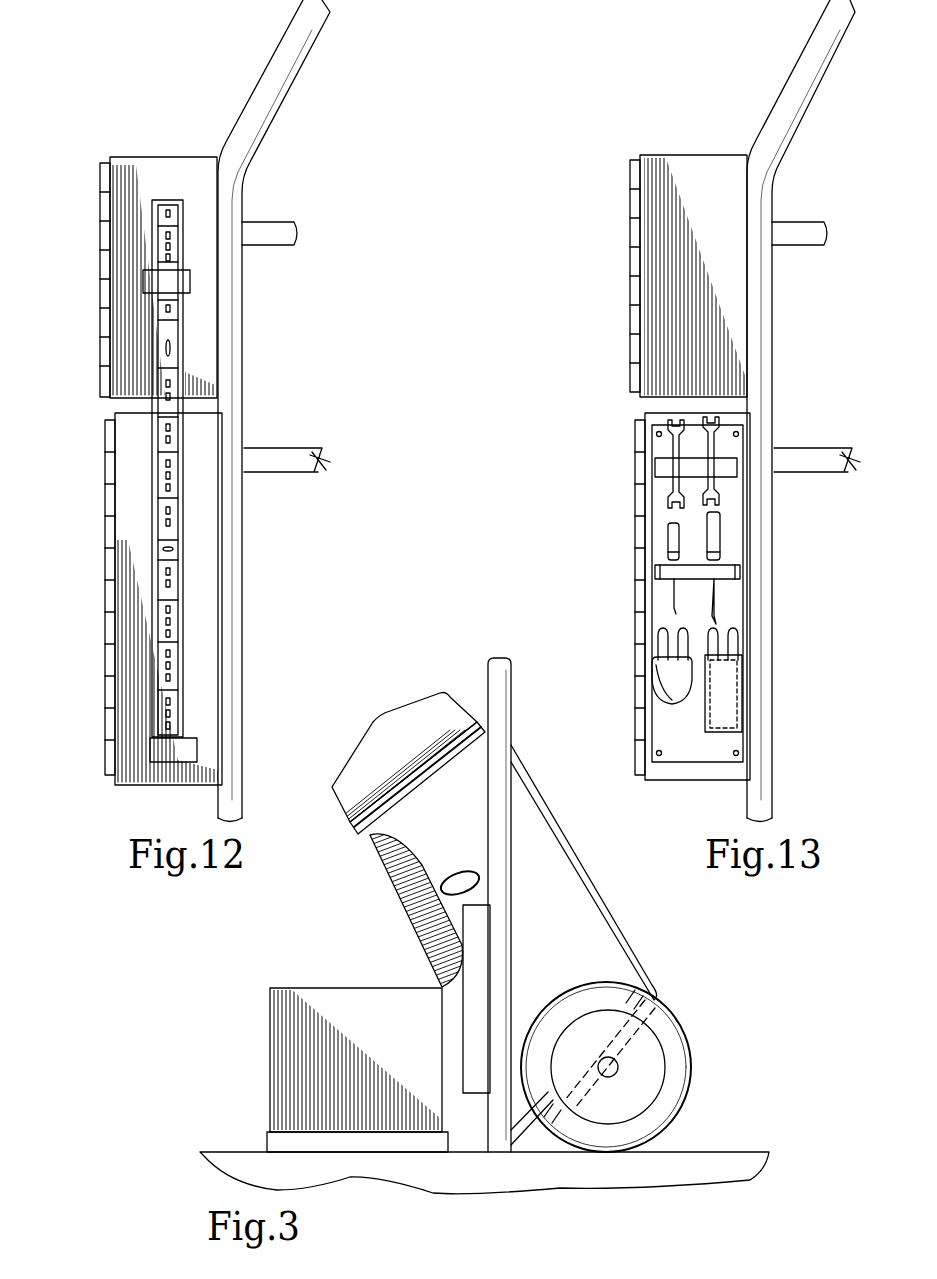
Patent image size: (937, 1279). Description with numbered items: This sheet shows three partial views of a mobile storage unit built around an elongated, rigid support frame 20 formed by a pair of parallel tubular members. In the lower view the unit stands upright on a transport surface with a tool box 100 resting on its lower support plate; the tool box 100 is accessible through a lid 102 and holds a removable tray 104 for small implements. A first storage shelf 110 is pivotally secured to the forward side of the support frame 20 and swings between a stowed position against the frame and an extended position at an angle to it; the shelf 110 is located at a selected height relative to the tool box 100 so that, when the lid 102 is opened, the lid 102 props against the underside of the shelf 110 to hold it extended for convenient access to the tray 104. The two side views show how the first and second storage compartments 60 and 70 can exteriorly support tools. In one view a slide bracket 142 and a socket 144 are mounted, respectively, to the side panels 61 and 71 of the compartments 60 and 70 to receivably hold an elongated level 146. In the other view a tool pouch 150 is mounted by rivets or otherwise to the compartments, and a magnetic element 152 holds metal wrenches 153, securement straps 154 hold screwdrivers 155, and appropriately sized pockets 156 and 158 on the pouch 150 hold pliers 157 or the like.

In FIG. 3, the support frame 20 is at (497, 931).
In FIG. 12, the first storage compartment 60 is at (100, 262).
In FIG. 13, the first storage compartment 60 is at (640, 265).
In FIG. 12, the side panel 61 is at (170, 190).
In FIG. 12, the second storage compartment 70 is at (105, 548).
In FIG. 13, the second storage compartment 70 is at (635, 520).
In FIG. 12, the side panel 71 is at (146, 546).
In FIG. 13, the side panel 71 is at (712, 772).
In FIG. 3, the tool box 100 is at (407, 1044).
In FIG. 3, the lid 102 is at (413, 893).
In FIG. 3, the removable tray 104 is at (418, 722).
In FIG. 3, the first storage shelf 110 is at (358, 832).
In FIG. 12, the slide bracket 142 is at (175, 281).
In FIG. 12, the socket 144 is at (180, 752).
In FIG. 12, the level 146 is at (186, 385).
In FIG. 13, the tool pouch 150 is at (680, 732).
In FIG. 13, the magnetic element 152 is at (667, 457).
In FIG. 13, the wrenches 153 is at (710, 465).
In FIG. 13, the securement straps 154 is at (716, 575).
In FIG. 13, the screwdrivers 155 is at (716, 548).
In FIG. 13, the pocket 156 is at (655, 680).
In FIG. 13, the pliers 157 is at (712, 640).
In FIG. 13, the pocket 158 is at (728, 687).